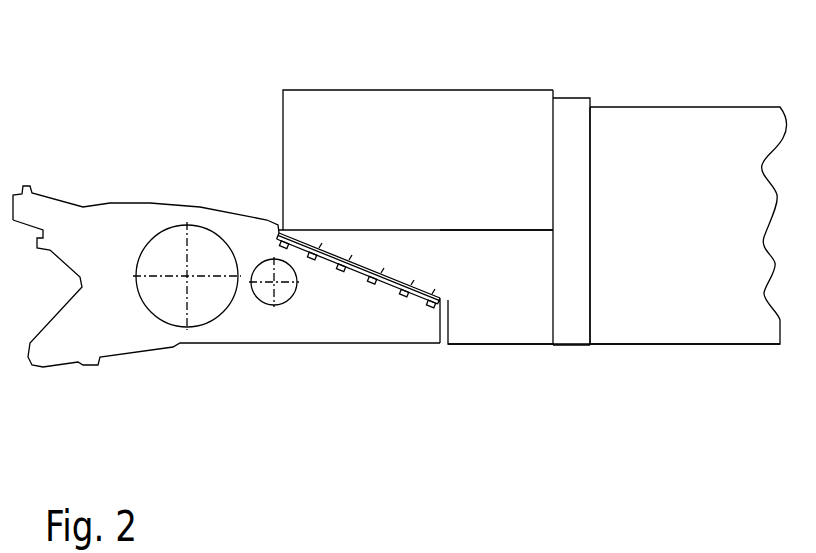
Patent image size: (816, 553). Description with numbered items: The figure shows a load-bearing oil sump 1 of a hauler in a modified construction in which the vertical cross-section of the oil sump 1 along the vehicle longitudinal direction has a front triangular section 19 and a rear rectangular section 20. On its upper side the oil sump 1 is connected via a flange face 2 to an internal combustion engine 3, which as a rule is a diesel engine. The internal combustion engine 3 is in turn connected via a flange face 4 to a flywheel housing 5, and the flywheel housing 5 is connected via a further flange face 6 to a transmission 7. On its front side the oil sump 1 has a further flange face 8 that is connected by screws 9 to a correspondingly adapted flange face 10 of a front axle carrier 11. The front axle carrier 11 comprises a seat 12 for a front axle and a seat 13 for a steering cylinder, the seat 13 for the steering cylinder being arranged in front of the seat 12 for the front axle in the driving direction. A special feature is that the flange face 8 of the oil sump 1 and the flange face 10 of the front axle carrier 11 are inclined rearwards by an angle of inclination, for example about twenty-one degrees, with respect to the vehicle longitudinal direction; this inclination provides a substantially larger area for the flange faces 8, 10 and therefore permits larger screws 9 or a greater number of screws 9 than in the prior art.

The oil sump 1 is at (460, 216).
The flange face 2 is at (331, 221).
The internal combustion engine 3 is at (322, 103).
The flange face 4 is at (546, 133).
The flywheel housing 5 is at (572, 113).
The flange face 6 is at (593, 322).
The transmission 7 is at (657, 130).
The flange face 8 is at (390, 285).
The screws 9 is at (343, 270).
The flange face 10 is at (422, 307).
The front axle carrier 11 is at (122, 227).
The seat for a front axle 12 is at (178, 247).
The seat for a steering cylinder 13 is at (263, 293).
The front triangular section 19 is at (380, 245).
The rear rectangular section 20 is at (510, 333).